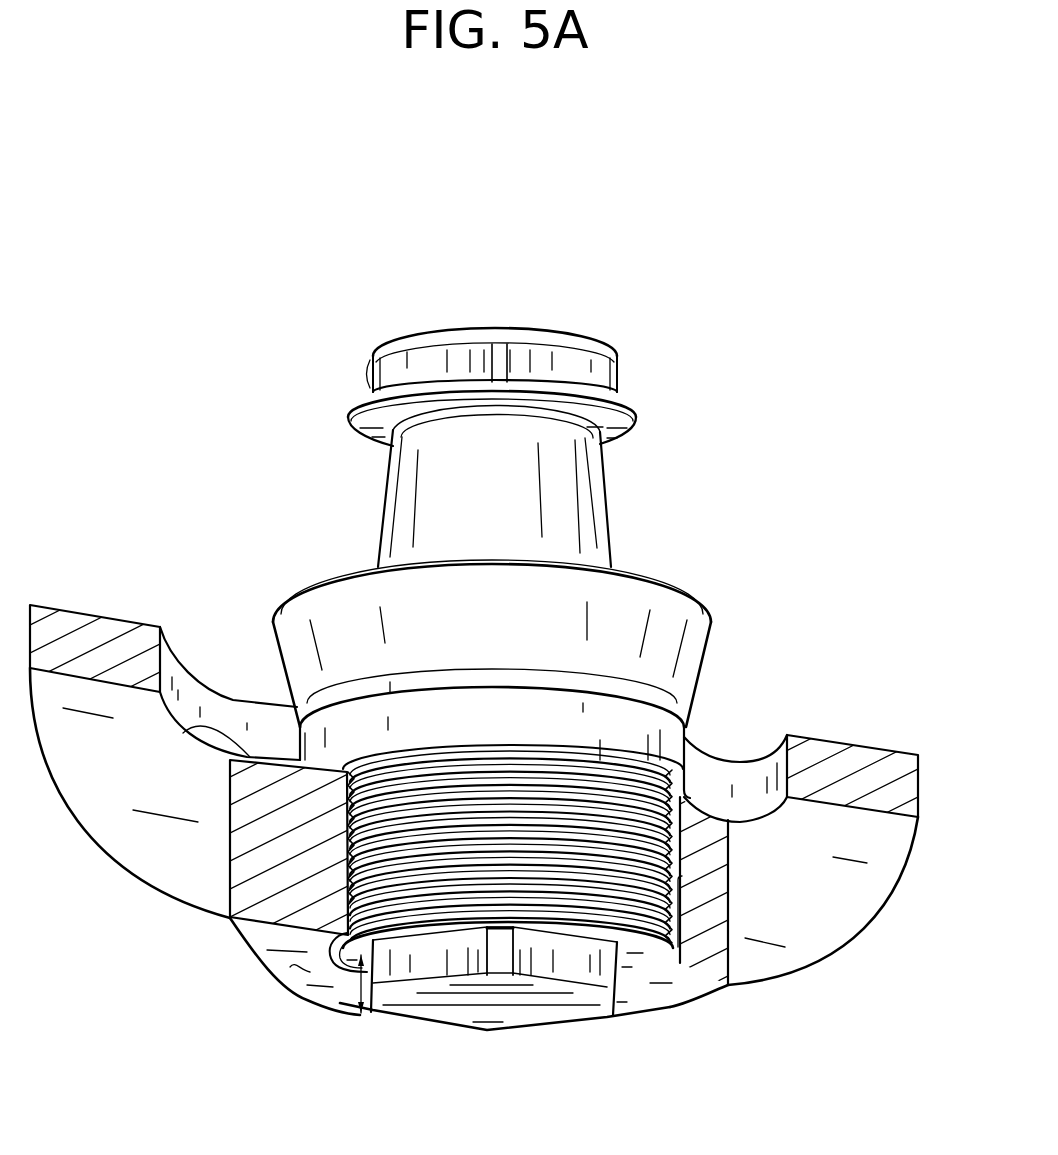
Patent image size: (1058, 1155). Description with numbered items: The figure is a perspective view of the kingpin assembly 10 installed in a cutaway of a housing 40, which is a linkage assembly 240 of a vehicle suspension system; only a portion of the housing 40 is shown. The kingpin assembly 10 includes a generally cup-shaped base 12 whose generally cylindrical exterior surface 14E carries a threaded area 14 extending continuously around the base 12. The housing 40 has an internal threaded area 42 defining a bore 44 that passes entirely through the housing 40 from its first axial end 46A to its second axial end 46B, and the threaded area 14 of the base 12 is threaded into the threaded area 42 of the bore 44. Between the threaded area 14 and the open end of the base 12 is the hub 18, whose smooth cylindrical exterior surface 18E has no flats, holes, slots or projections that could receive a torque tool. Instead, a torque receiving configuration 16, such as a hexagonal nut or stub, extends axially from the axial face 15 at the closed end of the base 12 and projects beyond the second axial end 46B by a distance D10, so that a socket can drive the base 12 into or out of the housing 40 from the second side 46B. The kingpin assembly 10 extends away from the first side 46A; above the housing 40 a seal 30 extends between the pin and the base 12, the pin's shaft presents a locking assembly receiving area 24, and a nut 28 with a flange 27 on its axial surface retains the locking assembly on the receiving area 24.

The kingpin assembly 10 is at (634, 276).
The nut 28 is at (590, 370).
The flange 27 is at (612, 432).
The locking assembly receiving area 24 is at (332, 438).
The seal 30 is at (726, 655).
The hub 18 is at (650, 740).
The smooth cylindrical exterior surface 18E is at (425, 720).
The internal threaded area 42 is at (400, 870).
The axial face 15 is at (338, 960).
The torque receiving configuration 16 is at (553, 960).
The housing 40 is at (270, 936).
The first axial end 46A is at (193, 728).
The base 12 is at (285, 726).
The threaded area 14 is at (683, 877).
The cylindrical exterior surface 14E is at (634, 846).
The bore 44 is at (637, 988).
The second axial end 46B is at (307, 970).
The distance D10 is at (358, 997).
The linkage assembly 240 is at (143, 855).